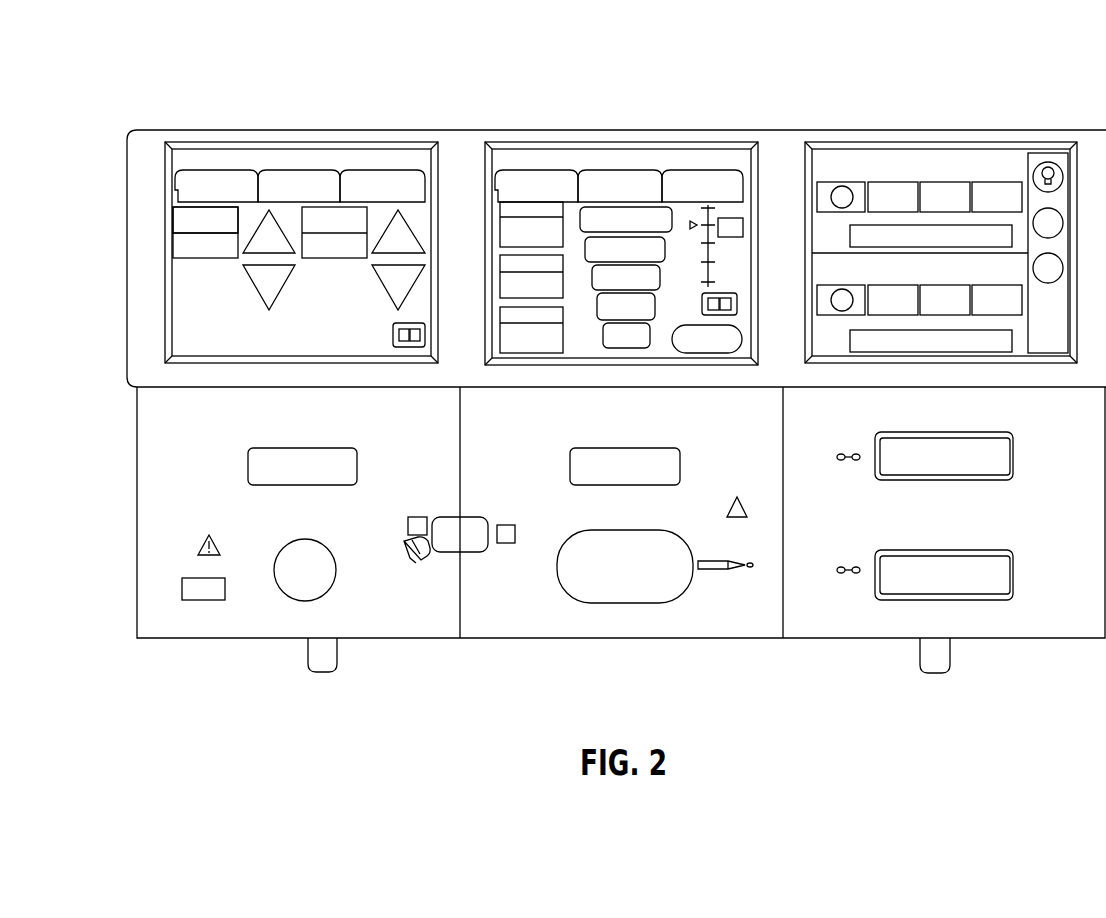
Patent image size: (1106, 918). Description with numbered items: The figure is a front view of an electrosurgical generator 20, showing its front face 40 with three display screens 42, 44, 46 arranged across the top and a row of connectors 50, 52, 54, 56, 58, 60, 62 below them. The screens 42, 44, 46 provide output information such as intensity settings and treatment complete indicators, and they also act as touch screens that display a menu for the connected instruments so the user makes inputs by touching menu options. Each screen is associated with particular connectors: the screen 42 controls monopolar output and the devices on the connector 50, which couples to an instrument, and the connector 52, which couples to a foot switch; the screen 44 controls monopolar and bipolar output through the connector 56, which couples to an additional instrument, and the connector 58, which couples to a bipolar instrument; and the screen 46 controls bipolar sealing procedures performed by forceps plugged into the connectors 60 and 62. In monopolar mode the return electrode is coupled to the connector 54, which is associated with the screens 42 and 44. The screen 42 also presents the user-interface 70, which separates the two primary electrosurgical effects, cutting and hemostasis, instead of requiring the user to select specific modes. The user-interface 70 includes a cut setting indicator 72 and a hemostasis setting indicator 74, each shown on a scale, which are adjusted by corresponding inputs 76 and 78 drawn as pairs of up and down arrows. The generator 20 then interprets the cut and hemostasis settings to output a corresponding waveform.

The generator 20 is at (983, 80).
The front face 40 is at (488, 130).
The display screen 42 is at (360, 142).
The display screen 44 is at (623, 142).
The display screen 46 is at (887, 142).
The connector 50 is at (248, 468).
The connector 52 is at (281, 550).
The connector 54 is at (453, 516).
The connector 56 is at (597, 448).
The connector 58 is at (572, 537).
The connector 60 is at (898, 432).
The connector 62 is at (898, 550).
The user-interface 70 is at (171, 222).
The cut setting indicator 72 is at (188, 207).
The hemostasis setting indicator 74 is at (313, 207).
The input 76 is at (252, 280).
The input 78 is at (380, 280).